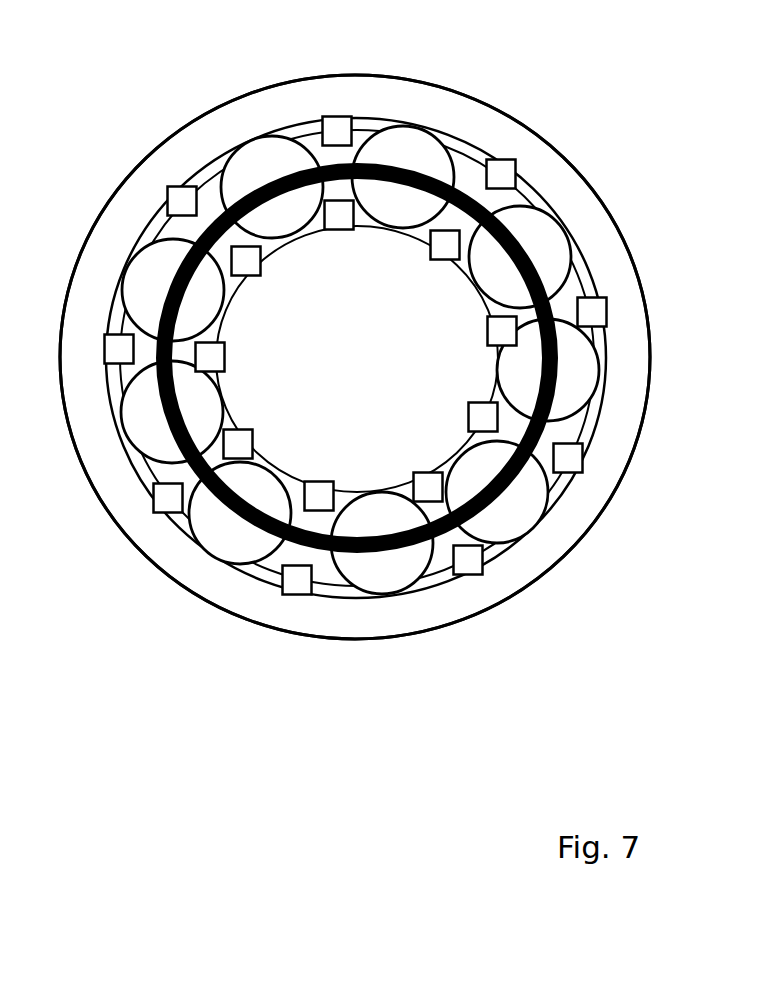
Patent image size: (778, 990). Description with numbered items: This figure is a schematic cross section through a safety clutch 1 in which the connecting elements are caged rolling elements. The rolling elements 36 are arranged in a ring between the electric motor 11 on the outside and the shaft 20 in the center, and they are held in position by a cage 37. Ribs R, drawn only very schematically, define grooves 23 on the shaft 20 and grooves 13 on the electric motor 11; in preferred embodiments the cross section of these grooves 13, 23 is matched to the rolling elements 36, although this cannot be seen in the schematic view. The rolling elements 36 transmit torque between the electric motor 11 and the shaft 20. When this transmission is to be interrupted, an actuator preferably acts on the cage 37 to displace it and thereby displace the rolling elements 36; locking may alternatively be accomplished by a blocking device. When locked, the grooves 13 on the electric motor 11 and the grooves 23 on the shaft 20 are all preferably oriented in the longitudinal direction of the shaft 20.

The safety clutch 1 is at (268, 645).
The electric motor 11 is at (158, 543).
The grooves 13 is at (165, 229).
The grooves 23 is at (262, 247).
The rolling elements 36 is at (410, 148).
The cage 37 is at (557, 303).
The ribs R is at (337, 125).
The shaft 20 is at (337, 371).